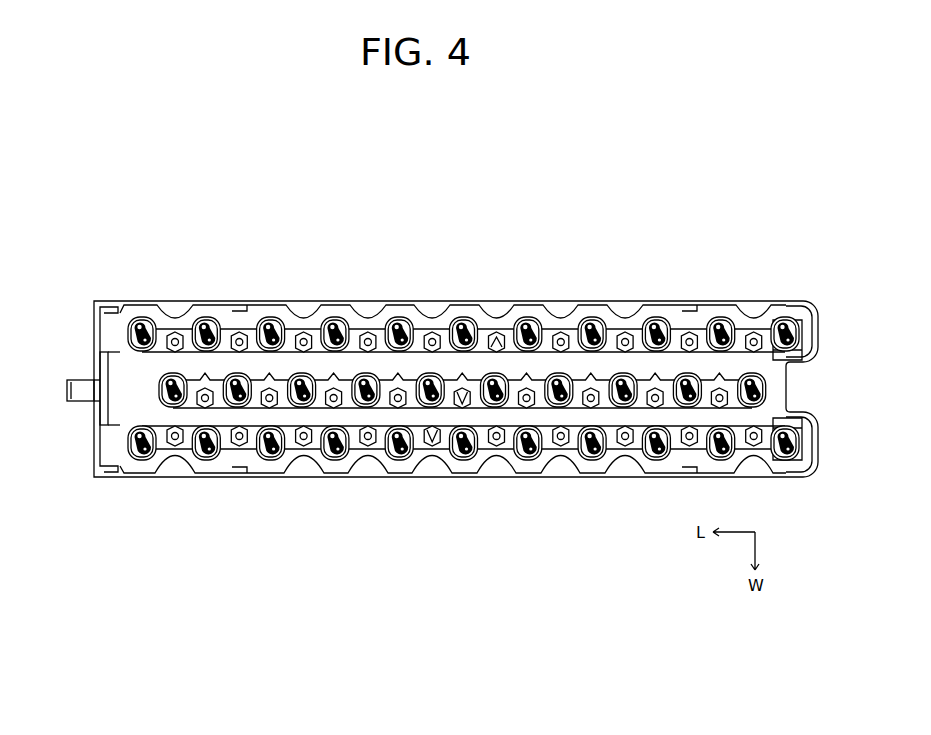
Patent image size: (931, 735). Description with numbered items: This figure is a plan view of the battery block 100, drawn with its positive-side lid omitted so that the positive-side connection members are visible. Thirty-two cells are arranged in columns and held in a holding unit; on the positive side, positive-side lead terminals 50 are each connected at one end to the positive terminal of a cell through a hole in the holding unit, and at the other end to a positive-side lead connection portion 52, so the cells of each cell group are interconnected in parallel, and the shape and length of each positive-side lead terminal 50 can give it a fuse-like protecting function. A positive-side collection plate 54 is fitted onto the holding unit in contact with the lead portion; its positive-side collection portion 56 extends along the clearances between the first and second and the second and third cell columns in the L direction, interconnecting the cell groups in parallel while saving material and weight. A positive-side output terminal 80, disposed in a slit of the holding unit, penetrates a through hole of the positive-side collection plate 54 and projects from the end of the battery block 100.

The battery block 100 is at (105, 721).
The positive-side lead terminal 50 is at (780, 325).
The positive-side lead connection portion 52 is at (797, 335).
The positive-side collection plate 54 is at (113, 350).
The positive-side collection portion 56 is at (288, 358).
The positive-side output terminal 80 is at (74, 395).